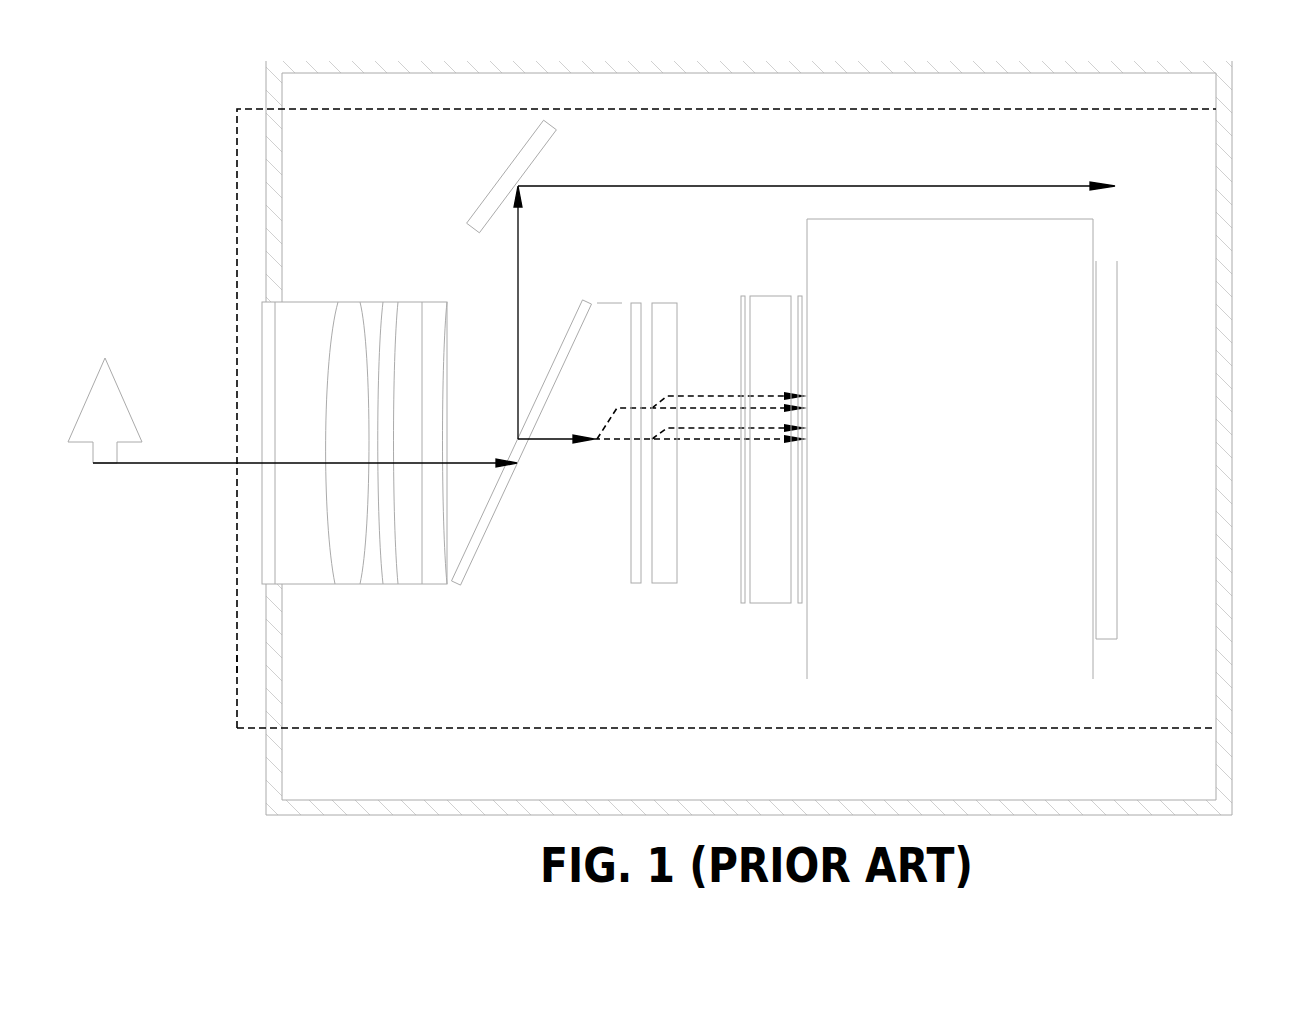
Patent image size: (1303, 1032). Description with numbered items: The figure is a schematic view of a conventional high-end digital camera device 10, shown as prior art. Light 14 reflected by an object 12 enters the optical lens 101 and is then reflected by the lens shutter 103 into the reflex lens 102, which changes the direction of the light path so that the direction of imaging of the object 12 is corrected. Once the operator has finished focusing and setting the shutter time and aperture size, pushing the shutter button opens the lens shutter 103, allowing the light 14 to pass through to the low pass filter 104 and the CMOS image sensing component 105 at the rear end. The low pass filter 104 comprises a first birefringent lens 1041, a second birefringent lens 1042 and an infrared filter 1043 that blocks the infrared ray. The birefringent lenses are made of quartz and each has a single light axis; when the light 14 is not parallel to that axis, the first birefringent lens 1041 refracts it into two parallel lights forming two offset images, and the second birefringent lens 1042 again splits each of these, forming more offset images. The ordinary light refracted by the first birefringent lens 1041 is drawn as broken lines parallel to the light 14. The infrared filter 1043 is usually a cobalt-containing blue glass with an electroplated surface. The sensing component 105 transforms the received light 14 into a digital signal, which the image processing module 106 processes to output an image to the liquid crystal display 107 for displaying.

The high-end digital camera device 10 is at (237, 665).
The object 12 is at (87, 398).
The light 14 is at (180, 463).
The optical lens 101 is at (307, 585).
The reflex lens 102 is at (505, 168).
The lens shutter 103 is at (472, 560).
The low pass filter 104 is at (633, 450).
The first birefringent lens 1041 is at (598, 556).
The second birefringent lens 1042 is at (677, 517).
The infrared filter 1043 is at (635, 583).
The CMOS image sensing component 105 is at (770, 295).
The image processing module 106 is at (940, 681).
The liquid crystal display (LCD) 107 is at (1116, 429).